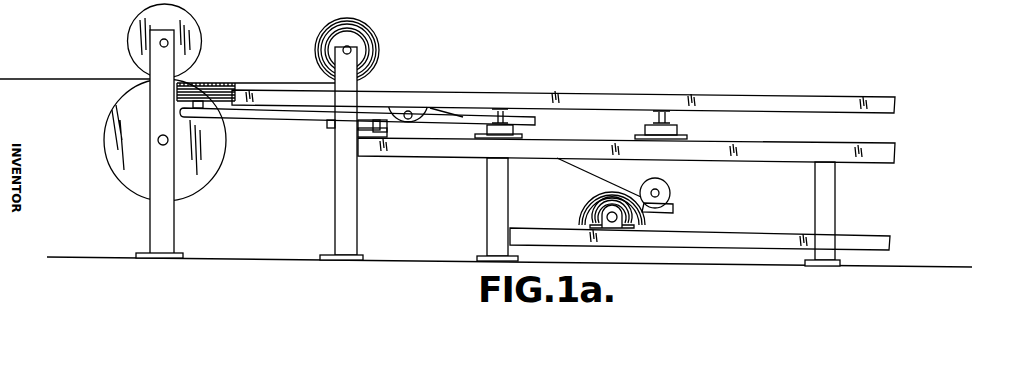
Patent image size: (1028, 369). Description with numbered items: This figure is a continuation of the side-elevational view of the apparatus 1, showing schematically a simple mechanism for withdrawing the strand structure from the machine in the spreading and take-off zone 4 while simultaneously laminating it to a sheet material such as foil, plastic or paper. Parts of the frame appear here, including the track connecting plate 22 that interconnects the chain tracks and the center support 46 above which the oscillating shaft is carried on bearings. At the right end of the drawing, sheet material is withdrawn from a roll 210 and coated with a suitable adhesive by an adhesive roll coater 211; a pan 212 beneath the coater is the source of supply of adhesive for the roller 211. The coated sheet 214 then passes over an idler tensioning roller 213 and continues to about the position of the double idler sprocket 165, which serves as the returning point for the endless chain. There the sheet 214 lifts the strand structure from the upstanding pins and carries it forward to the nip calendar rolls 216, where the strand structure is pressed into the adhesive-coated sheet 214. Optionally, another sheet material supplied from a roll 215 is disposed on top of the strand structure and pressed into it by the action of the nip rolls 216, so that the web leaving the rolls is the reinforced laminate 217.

The apparatus 1 is at (509, 135).
The spreading and take-off zone 4 is at (615, 85).
The track connecting plate 22 is at (765, 100).
The center support 46 is at (873, 157).
The double idler sprocket 165 is at (206, 91).
The roll 210 is at (587, 208).
The adhesive roll coater 211 is at (668, 193).
The pan 212 is at (673, 210).
The idler tensioning roller 213 is at (401, 110).
The coated sheet 214 is at (593, 175).
The roll 215 is at (373, 45).
The nip calendar rolls 216 is at (140, 40).
The reinforced laminate 217 is at (48, 81).